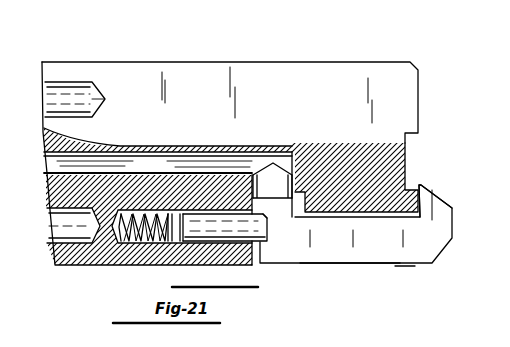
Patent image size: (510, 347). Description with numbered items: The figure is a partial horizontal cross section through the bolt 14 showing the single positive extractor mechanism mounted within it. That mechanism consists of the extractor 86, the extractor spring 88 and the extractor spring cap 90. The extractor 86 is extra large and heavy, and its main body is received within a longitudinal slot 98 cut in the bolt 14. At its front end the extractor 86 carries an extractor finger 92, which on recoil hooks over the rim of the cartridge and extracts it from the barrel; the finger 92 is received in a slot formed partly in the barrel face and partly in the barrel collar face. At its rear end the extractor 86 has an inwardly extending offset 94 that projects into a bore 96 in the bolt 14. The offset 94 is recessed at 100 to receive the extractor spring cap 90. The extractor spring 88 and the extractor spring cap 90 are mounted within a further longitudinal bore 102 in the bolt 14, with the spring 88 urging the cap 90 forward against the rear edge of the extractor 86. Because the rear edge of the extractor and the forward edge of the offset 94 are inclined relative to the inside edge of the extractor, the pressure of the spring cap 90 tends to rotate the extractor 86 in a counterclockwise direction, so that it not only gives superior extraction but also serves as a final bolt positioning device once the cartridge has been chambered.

The bolt 14 is at (255, 62).
The extractor 86 is at (400, 257).
The extractor spring 88 is at (126, 256).
The extractor spring cap 90 is at (203, 243).
The extractor finger 92 is at (437, 196).
The offset 94 is at (279, 173).
The bore 96 is at (268, 201).
The longitudinal slot 98 is at (350, 264).
The recess 100 is at (264, 223).
The further longitudinal bore 102 is at (117, 265).